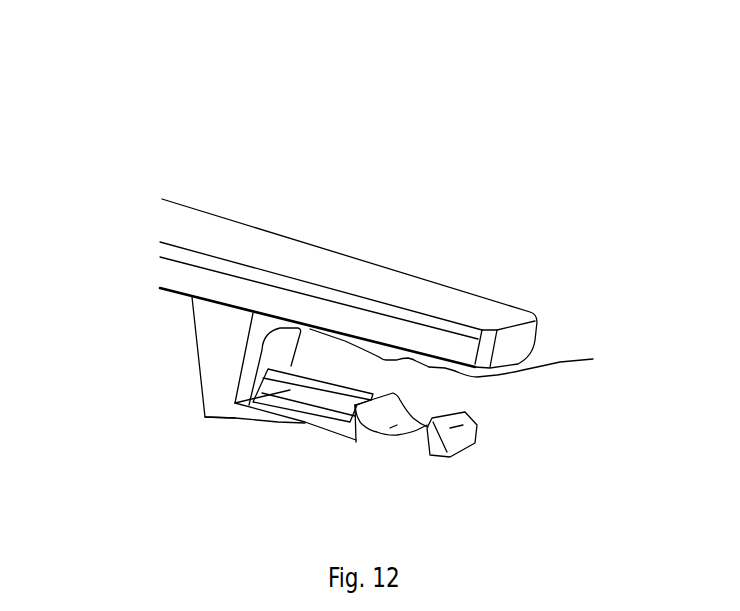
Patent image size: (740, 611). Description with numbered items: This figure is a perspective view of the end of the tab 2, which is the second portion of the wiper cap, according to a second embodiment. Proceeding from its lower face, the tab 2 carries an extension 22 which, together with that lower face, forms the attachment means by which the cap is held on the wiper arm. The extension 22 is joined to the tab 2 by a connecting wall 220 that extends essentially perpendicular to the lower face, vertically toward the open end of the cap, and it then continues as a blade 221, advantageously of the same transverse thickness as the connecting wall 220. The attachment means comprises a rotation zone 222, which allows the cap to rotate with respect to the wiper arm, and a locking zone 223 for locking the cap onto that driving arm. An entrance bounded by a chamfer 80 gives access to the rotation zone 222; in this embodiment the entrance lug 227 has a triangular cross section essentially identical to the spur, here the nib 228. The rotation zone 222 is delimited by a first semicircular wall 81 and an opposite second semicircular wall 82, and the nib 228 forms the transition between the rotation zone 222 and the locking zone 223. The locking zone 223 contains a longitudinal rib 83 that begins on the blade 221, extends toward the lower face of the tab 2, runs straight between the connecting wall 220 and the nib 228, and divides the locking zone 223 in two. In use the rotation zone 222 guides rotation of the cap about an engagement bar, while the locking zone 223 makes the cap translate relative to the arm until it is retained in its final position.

The tab 2 is at (287, 221).
The extension 22 is at (197, 419).
The connecting wall 220 is at (218, 342).
The blade 221 is at (305, 420).
The rotation zone 222 is at (435, 390).
The locking zone 223 is at (329, 361).
The entrance lug 227 is at (428, 450).
The nib 228 is at (355, 440).
The chamfer 80 is at (500, 520).
The first semicircular wall 81 is at (390, 430).
The second semicircular wall 82 is at (405, 363).
The longitudinal rib 83 is at (238, 417).